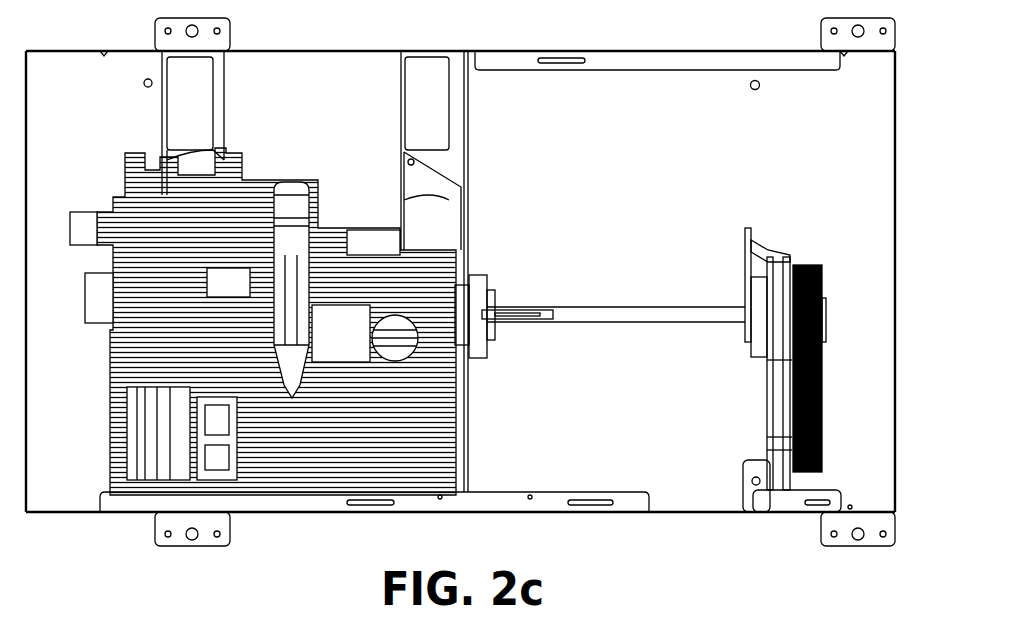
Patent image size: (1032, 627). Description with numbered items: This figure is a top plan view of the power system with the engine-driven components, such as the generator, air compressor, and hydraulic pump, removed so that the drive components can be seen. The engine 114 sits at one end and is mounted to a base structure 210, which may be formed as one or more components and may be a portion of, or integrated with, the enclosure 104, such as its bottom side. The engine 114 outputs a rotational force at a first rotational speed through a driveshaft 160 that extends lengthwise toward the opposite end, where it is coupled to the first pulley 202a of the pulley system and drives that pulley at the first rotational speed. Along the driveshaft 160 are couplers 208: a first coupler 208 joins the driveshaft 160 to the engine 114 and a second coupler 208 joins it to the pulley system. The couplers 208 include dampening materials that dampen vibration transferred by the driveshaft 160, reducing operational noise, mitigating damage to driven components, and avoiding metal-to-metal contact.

The enclosure 104 is at (652, 49).
The engine 114 is at (273, 180).
The coupler 208 is at (488, 270).
The driveshaft 160 is at (605, 323).
The first pulley 202a is at (826, 290).
The base structure 210 is at (280, 514).